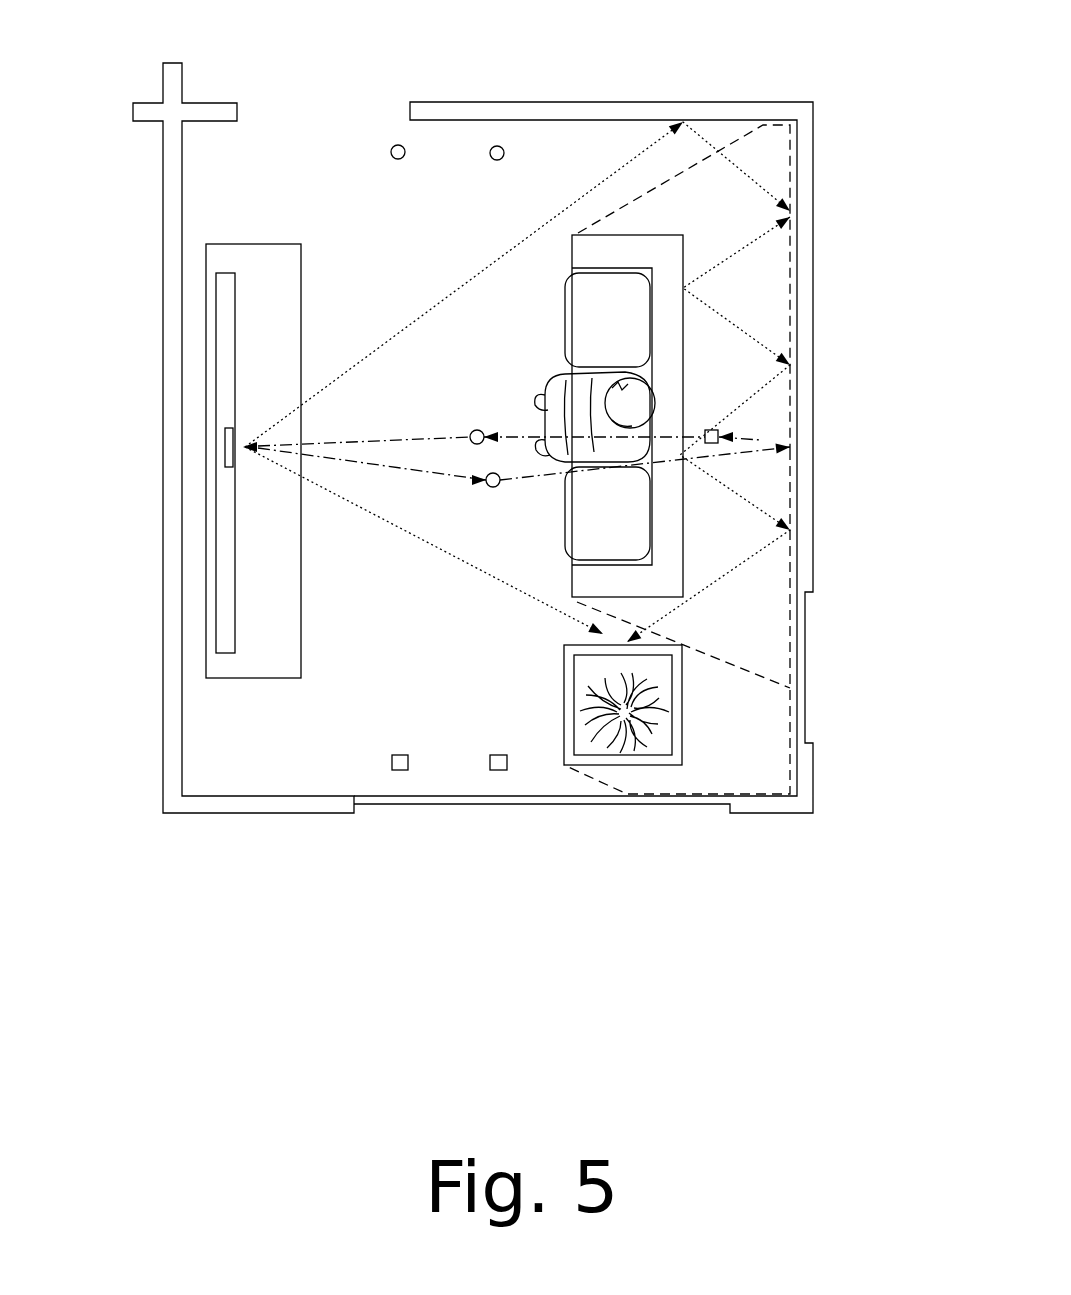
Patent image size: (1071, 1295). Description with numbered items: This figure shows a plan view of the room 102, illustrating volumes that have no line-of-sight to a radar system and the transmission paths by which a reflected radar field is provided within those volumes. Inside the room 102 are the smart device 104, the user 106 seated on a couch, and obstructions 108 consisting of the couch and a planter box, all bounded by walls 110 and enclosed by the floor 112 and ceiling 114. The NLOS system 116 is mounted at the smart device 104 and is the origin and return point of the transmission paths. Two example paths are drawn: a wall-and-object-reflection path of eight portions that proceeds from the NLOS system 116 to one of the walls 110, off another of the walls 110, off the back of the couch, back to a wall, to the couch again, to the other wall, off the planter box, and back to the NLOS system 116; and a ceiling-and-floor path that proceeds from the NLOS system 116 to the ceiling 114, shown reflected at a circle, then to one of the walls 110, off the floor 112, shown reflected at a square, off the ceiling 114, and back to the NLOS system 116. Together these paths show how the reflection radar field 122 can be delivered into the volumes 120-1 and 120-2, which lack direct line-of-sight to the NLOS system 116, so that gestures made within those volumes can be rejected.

The room 102 is at (797, 70).
The smart device 104 is at (222, 590).
The user 106 is at (648, 453).
The obstructions 108 is at (683, 572).
The walls 110 is at (218, 807).
The floor 112 is at (490, 769).
The ceiling 114 is at (490, 148).
The NLOS system 116 is at (228, 445).
The volume 120-1 is at (747, 204).
The volume 120-2 is at (768, 784).
The reflection radar field 122 is at (405, 250).